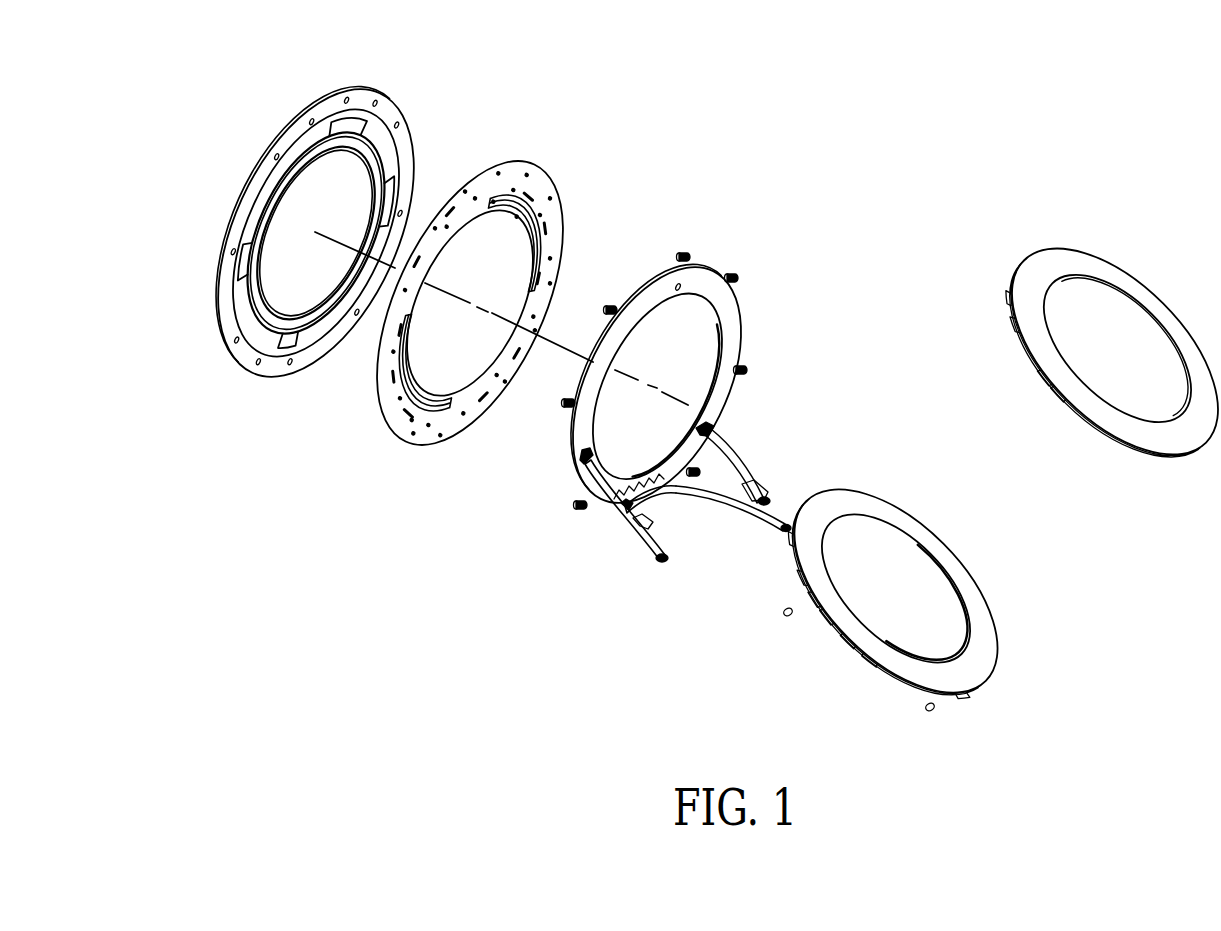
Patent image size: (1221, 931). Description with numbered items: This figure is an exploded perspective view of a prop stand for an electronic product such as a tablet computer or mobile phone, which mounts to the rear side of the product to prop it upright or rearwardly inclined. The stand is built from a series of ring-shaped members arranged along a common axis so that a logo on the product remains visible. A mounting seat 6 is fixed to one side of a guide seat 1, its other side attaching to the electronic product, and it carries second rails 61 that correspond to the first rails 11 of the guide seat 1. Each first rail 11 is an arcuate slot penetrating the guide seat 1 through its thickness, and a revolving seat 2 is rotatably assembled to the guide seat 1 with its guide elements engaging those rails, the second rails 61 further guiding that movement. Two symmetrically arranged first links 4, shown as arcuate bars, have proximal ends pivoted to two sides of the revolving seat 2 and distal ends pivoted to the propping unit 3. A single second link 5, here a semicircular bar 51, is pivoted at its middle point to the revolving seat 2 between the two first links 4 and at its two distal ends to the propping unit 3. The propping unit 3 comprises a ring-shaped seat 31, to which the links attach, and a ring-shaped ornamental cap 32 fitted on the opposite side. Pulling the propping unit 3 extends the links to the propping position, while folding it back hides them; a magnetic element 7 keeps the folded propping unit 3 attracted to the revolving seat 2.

The guide seat 1 is at (473, 290).
The first rail 11 is at (532, 210).
The revolving seat 2 is at (710, 267).
The propping unit 3 is at (988, 471).
The ring-shaped seat 31 is at (983, 618).
The ring-shaped ornamental cap 32 is at (1153, 433).
The first link 4 is at (593, 482).
The second link 5 is at (681, 539).
The semicircular bar 51 is at (723, 513).
The mounting seat 6 is at (332, 242).
The second rail 61 is at (382, 162).
The magnetic element 7 is at (785, 617).